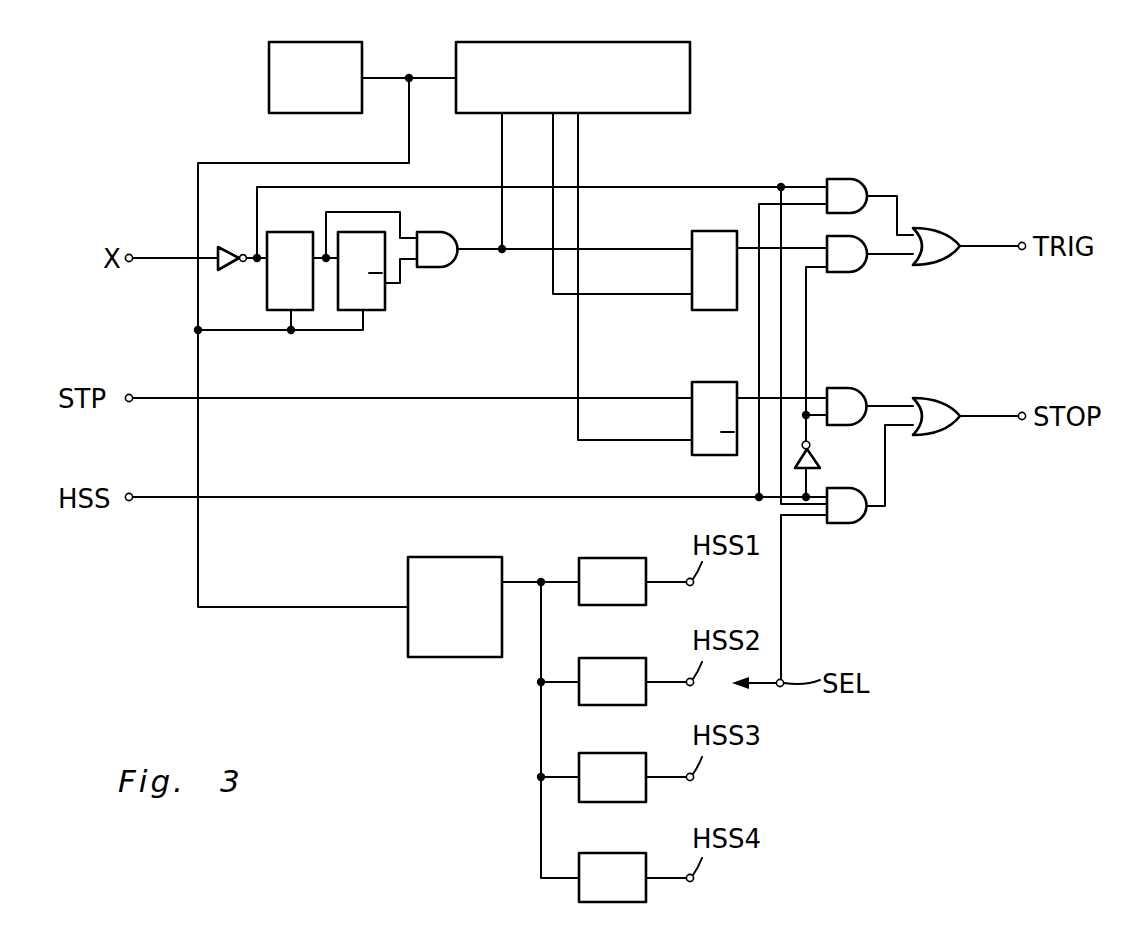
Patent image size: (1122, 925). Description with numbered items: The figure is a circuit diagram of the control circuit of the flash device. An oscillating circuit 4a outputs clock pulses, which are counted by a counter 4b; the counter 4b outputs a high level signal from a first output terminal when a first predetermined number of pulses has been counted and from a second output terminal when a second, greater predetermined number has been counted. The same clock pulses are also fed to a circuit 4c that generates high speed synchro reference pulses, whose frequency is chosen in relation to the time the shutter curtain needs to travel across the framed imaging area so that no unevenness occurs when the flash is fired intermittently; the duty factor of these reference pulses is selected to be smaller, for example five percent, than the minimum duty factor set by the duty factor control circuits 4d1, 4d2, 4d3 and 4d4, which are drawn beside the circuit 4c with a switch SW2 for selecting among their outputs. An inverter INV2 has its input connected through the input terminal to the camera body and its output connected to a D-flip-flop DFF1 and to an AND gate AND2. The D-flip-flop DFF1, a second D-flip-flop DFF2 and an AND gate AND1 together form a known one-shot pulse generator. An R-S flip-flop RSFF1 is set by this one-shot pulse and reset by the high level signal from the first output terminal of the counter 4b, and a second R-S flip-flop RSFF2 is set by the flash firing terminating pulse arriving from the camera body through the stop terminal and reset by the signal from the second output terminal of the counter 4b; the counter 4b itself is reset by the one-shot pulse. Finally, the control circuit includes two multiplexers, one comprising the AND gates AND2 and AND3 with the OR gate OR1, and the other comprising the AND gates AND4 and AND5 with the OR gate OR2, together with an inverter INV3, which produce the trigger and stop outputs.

The oscillating circuit 4a is at (269, 78).
The counter 4b is at (690, 78).
The circuit operable to generate high speed synchro reference pulses 4c is at (452, 660).
The duty factor control circuit 4d1 is at (610, 560).
The duty factor control circuit 4d2 is at (610, 660).
The duty factor control circuit 4d3 is at (610, 755).
The duty factor control circuit 4d4 is at (610, 855).
The inverter INV2 is at (230, 248).
The inverter INV3 is at (822, 462).
The D-flip-flop DFF1 is at (279, 312).
The D-flip-flop DFF2 is at (385, 312).
The AND gate AND1 is at (442, 235).
The AND gate AND2 is at (837, 180).
The AND gate AND3 is at (847, 272).
The AND gate AND4 is at (847, 390).
The AND gate AND5 is at (843, 527).
The OR gate OR1 is at (930, 231).
The OR gate OR2 is at (931, 401).
The R-S flip-flop RSFF1 is at (700, 229).
The R-S flip-flop RSFF2 is at (700, 380).
The selector switch SW2 is at (760, 690).